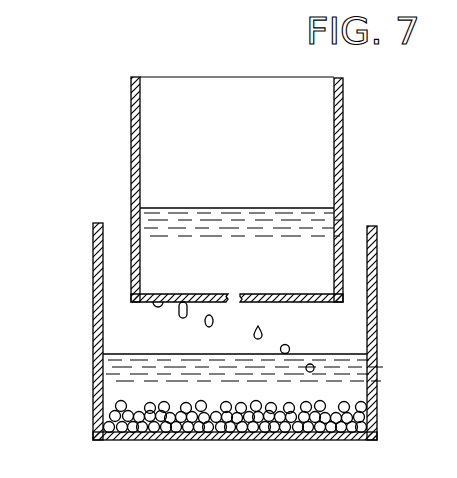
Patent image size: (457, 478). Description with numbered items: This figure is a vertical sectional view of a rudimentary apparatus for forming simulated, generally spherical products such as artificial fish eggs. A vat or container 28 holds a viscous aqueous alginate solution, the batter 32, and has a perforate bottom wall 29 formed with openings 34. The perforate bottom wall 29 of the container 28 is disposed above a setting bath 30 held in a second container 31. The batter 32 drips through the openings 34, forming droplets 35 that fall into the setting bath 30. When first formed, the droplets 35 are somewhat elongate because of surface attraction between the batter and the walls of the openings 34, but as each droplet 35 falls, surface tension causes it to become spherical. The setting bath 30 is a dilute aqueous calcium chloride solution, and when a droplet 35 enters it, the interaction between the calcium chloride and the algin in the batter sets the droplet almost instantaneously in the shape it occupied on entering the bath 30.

The vat or container 28 is at (341, 128).
The perforate bottom wall 29 is at (297, 297).
The setting bath 30 is at (138, 366).
The second container 31 is at (372, 360).
The batter 32 is at (208, 228).
The openings 34 is at (160, 298).
The droplets 35 is at (290, 346).